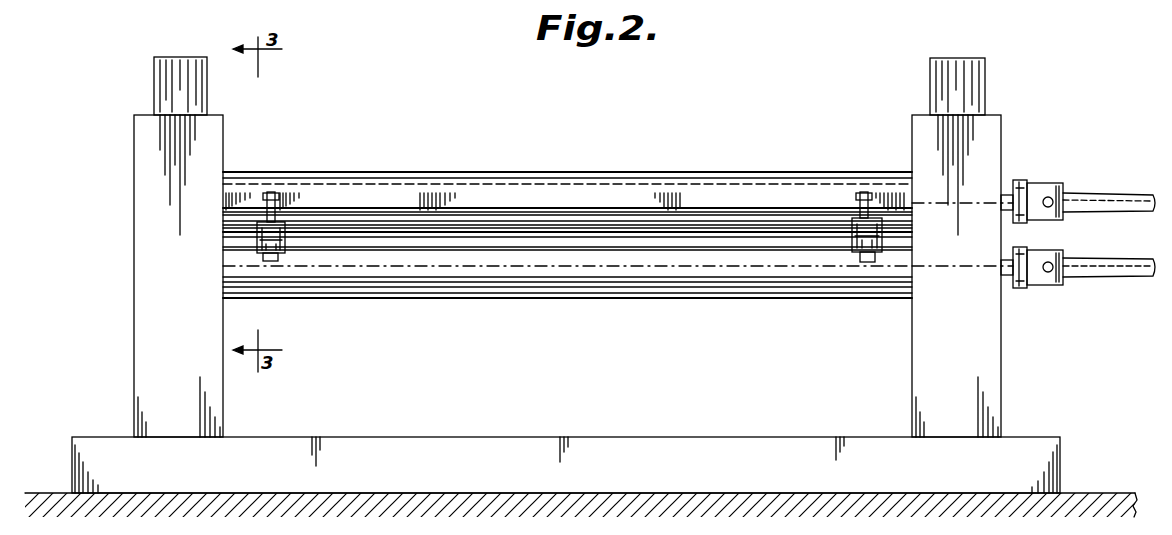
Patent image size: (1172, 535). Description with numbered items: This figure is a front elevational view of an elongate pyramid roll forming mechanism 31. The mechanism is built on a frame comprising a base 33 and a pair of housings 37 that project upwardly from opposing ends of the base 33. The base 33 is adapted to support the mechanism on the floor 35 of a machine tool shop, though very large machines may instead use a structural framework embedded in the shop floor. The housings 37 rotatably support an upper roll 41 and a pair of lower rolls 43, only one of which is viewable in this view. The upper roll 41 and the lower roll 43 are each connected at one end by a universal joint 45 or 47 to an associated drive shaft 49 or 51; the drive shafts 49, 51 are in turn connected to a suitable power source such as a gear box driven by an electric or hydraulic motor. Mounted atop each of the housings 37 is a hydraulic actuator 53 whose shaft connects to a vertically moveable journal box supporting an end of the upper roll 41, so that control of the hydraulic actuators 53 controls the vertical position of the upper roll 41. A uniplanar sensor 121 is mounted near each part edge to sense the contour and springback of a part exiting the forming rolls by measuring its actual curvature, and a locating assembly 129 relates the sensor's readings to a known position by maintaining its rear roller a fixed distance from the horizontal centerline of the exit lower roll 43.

The pyramid roll forming mechanism 31 is at (722, 158).
The base 33 is at (1061, 449).
The floor 35 is at (1115, 492).
The housing 37 is at (208, 418).
The upper roll 41 is at (548, 185).
The lower roll 43 is at (541, 285).
The universal joint 45 is at (1045, 192).
The universal joint 47 is at (1047, 286).
The drive shaft 49 is at (1125, 199).
The drive shaft 51 is at (1130, 277).
The hydraulic actuator 53 is at (186, 68).
The uniplanar sensor 121 is at (289, 248).
The locating assembly 129 is at (338, 200).